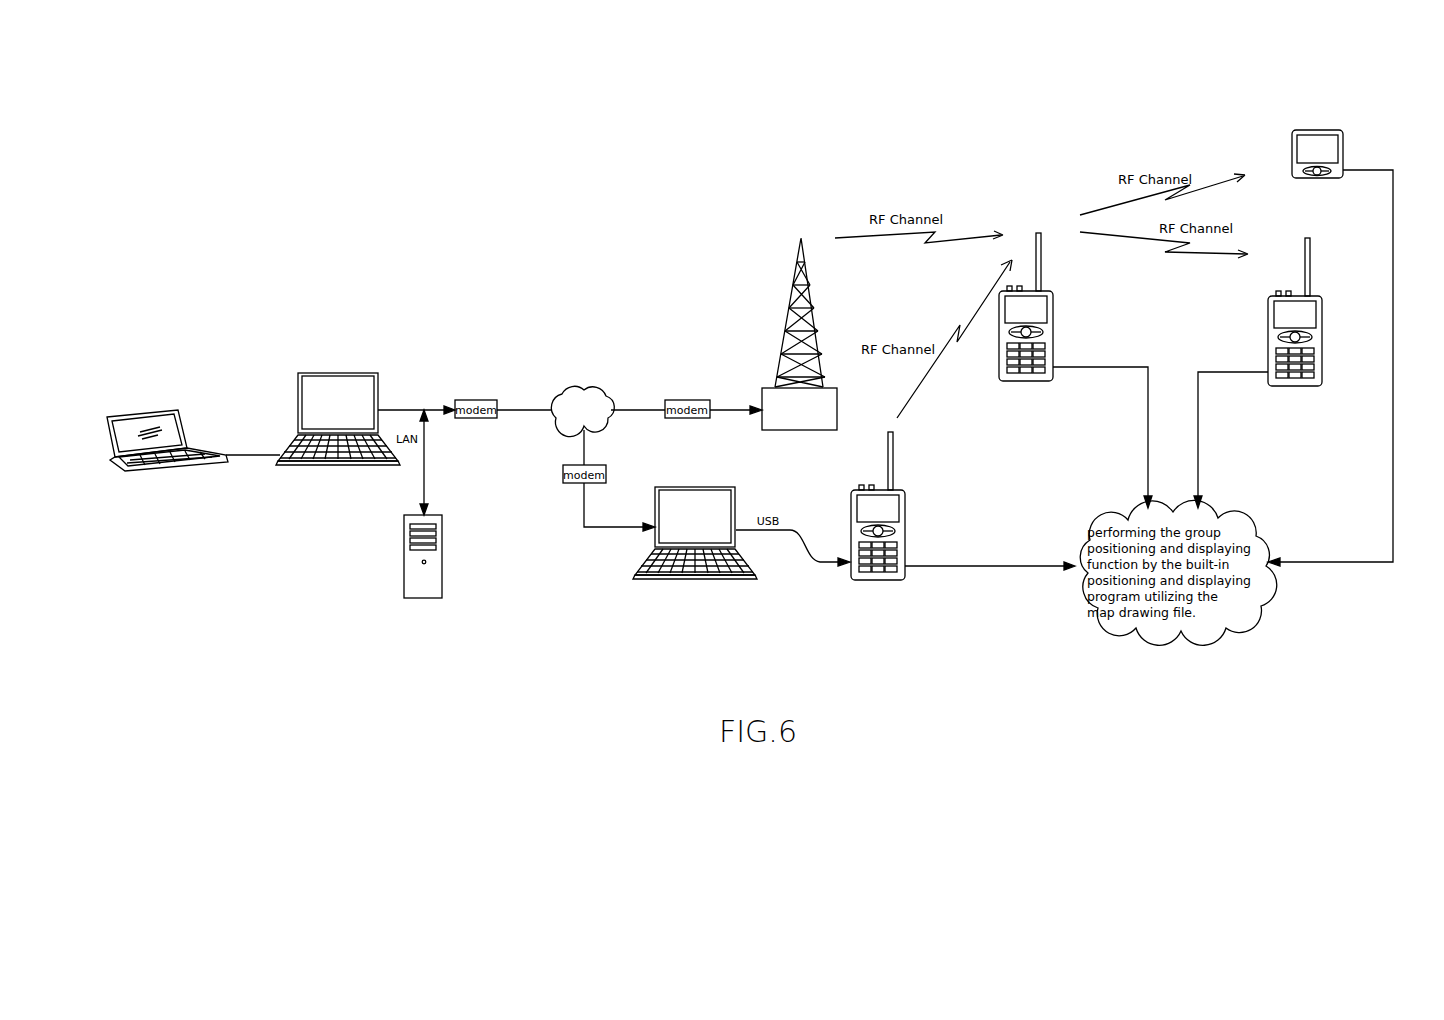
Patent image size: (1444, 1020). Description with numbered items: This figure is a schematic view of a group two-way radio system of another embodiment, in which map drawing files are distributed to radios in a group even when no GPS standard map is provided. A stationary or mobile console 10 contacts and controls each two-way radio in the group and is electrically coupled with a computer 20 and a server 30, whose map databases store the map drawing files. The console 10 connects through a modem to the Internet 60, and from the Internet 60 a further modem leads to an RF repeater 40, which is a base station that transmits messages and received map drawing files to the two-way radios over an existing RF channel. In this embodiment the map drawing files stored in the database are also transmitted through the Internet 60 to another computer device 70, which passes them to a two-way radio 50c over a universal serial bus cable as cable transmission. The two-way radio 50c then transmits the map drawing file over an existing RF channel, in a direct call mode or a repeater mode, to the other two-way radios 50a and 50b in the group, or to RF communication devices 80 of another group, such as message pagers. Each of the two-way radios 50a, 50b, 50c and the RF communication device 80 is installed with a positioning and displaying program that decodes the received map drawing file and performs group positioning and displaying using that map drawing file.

The console 10 is at (343, 373).
The computer 20 is at (130, 468).
The server 30 is at (404, 557).
The radio frequency (RF) repeater 40 is at (787, 312).
The two-way radio 50a is at (1056, 334).
The two-way radio 50b is at (1267, 354).
The two-way radio 50c is at (908, 536).
The Internet 60 is at (565, 396).
The computer device 70 is at (635, 563).
The RF communication device 80 is at (1346, 156).